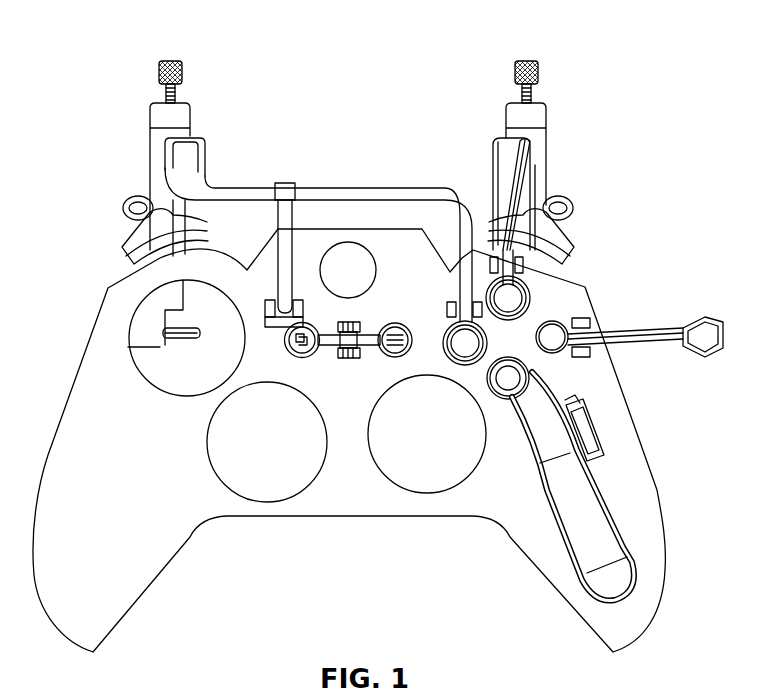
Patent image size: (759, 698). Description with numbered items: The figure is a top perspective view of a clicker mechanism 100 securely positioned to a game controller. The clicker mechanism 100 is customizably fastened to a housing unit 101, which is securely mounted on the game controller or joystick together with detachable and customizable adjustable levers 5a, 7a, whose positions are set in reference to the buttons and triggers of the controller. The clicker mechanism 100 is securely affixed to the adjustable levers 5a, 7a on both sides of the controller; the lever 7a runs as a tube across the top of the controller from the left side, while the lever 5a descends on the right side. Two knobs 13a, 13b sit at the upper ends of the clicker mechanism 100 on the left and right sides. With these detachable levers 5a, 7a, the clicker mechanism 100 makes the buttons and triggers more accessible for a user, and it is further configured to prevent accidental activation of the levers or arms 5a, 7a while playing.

The clicker mechanism 100 is at (188, 52).
The housing unit 101 is at (378, 440).
The first adjustment knob 13a is at (158, 70).
The second adjustment knob 13b is at (514, 70).
The adjustable lever 7a is at (358, 193).
The adjustable lever 5a is at (513, 202).